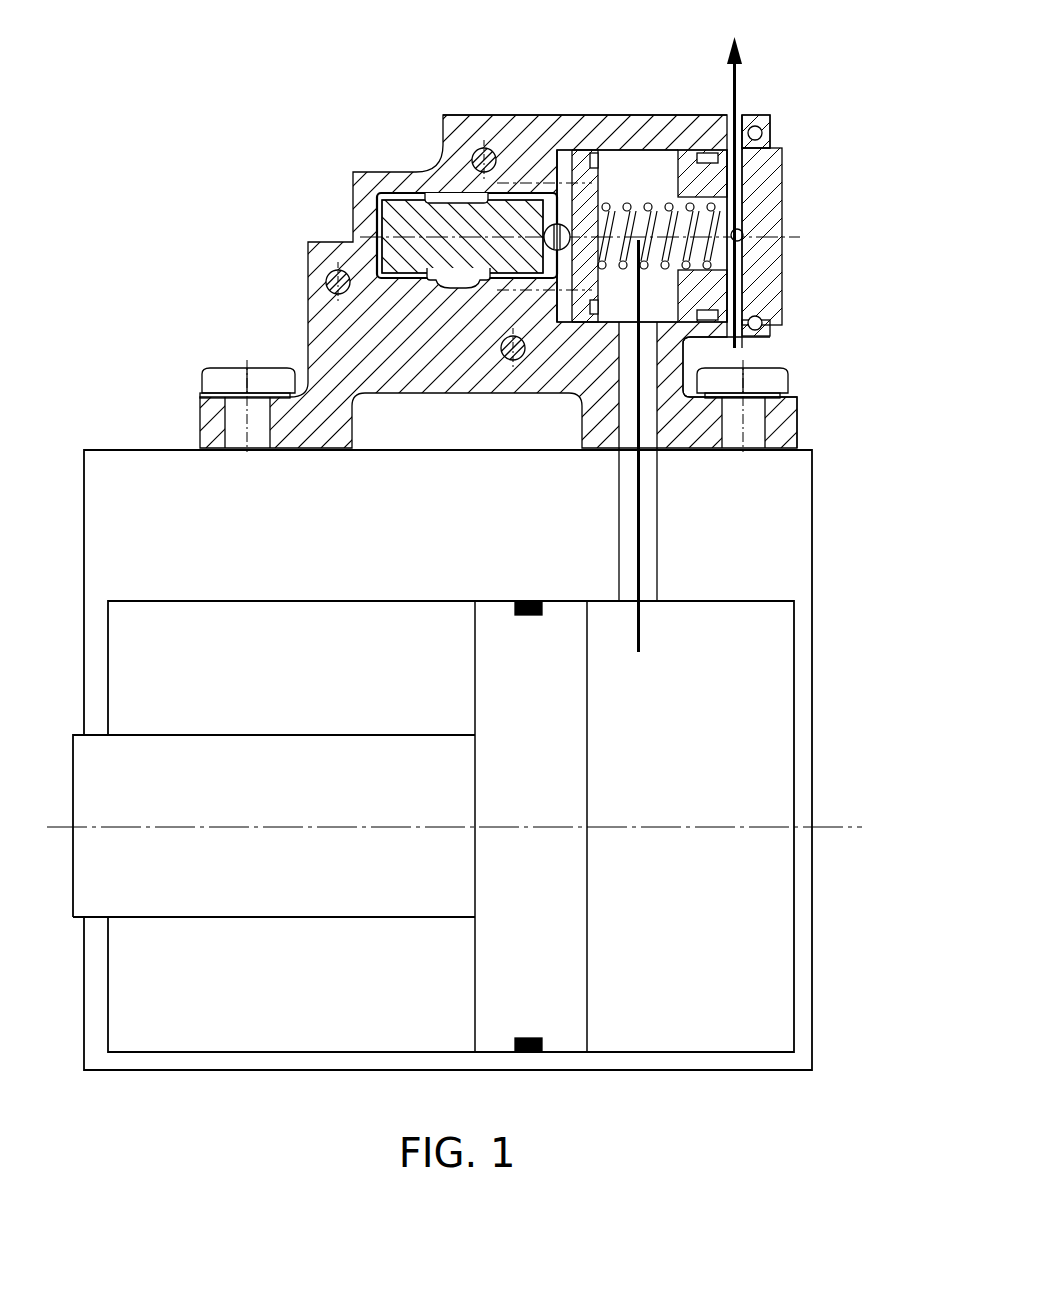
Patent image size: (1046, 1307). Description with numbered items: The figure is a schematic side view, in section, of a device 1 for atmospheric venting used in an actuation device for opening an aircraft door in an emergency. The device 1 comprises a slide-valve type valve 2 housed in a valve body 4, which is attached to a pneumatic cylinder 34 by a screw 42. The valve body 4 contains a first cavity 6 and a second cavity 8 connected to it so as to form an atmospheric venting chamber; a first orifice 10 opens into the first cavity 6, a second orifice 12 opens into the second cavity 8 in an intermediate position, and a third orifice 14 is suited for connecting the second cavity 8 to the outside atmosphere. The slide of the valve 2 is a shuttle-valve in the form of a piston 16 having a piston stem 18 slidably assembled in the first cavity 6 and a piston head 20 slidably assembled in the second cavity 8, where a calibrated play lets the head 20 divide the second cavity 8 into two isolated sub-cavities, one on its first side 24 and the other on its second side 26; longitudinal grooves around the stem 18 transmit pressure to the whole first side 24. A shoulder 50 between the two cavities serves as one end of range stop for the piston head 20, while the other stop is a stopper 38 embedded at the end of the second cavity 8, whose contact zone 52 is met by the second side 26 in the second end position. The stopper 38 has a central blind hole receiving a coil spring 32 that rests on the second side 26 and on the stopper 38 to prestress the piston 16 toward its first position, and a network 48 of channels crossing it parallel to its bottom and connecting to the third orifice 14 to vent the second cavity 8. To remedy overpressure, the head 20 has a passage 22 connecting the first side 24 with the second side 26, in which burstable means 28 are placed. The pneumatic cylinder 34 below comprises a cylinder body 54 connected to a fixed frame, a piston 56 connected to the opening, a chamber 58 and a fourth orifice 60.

The device for atmospheric venting 1 is at (264, 42).
The valve 2 is at (548, 110).
The valve body 4 is at (322, 320).
The first cavity 6 is at (510, 272).
The second cavity 8 is at (656, 172).
The first orifice 10 is at (453, 272).
The second orifice 12 is at (645, 333).
The third orifice 14 is at (740, 127).
The piston 16 is at (443, 200).
The piston stem 18 is at (507, 262).
The piston head 20 is at (587, 322).
The passage 22 is at (575, 215).
The first side 24 is at (583, 295).
The second side 26 is at (612, 202).
The burstable means 28 is at (660, 165).
The spring 32 is at (670, 248).
The pneumatic cylinder 34 is at (796, 1066).
The stopper 38 is at (772, 173).
The screw 42 is at (772, 383).
The network of channels 48 is at (740, 163).
The shoulder 50 is at (583, 233).
The contact zone 52 is at (674, 178).
The cylinder body 54 is at (780, 482).
The piston 56 is at (568, 698).
The chamber 58 is at (759, 788).
The fourth orifice 60 is at (647, 570).